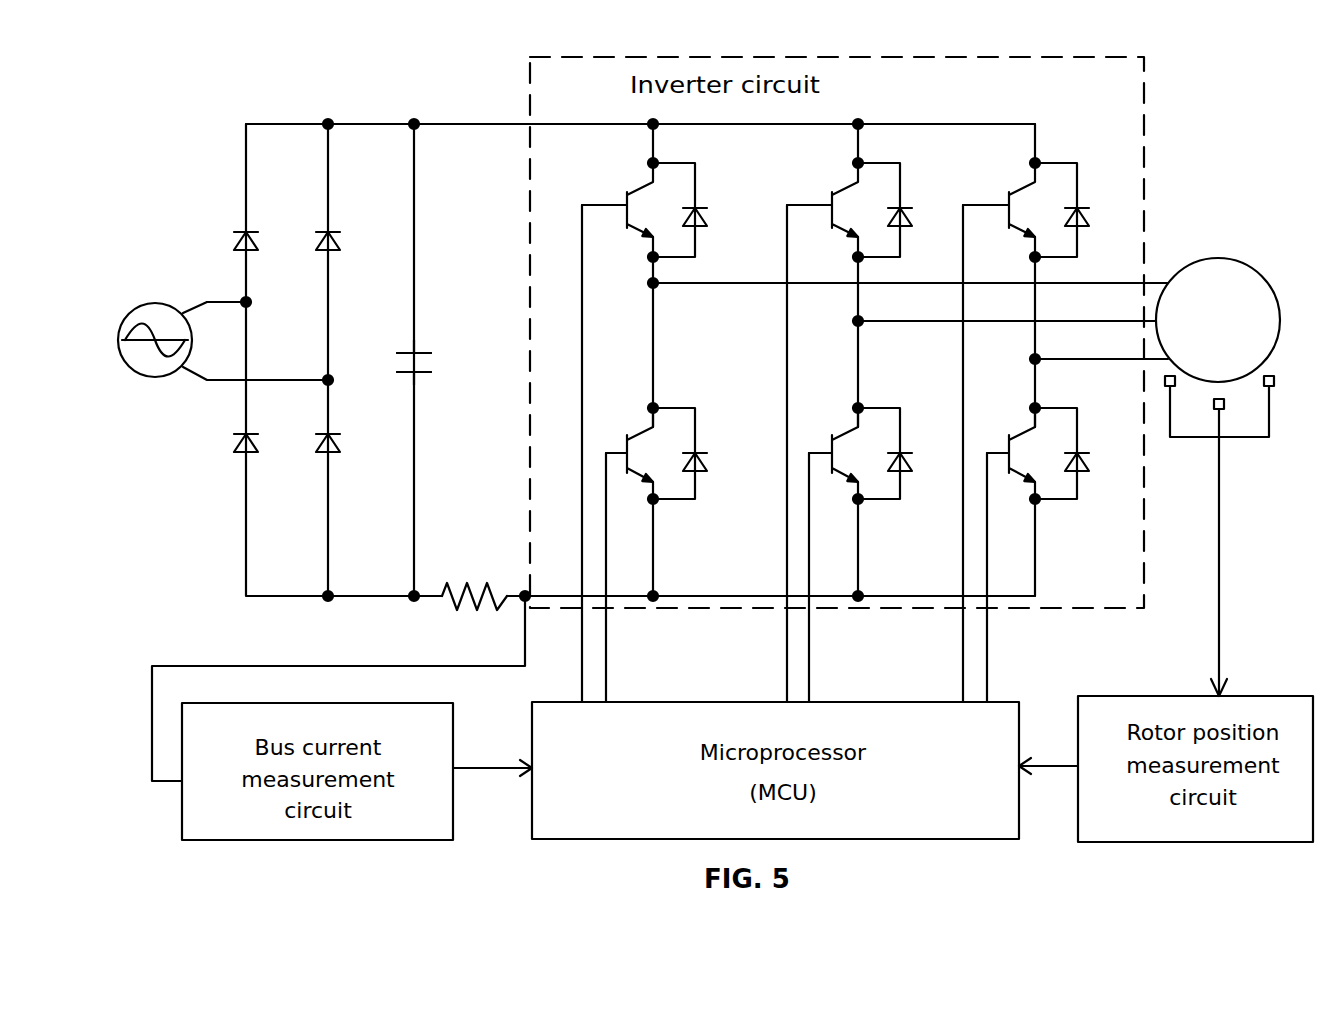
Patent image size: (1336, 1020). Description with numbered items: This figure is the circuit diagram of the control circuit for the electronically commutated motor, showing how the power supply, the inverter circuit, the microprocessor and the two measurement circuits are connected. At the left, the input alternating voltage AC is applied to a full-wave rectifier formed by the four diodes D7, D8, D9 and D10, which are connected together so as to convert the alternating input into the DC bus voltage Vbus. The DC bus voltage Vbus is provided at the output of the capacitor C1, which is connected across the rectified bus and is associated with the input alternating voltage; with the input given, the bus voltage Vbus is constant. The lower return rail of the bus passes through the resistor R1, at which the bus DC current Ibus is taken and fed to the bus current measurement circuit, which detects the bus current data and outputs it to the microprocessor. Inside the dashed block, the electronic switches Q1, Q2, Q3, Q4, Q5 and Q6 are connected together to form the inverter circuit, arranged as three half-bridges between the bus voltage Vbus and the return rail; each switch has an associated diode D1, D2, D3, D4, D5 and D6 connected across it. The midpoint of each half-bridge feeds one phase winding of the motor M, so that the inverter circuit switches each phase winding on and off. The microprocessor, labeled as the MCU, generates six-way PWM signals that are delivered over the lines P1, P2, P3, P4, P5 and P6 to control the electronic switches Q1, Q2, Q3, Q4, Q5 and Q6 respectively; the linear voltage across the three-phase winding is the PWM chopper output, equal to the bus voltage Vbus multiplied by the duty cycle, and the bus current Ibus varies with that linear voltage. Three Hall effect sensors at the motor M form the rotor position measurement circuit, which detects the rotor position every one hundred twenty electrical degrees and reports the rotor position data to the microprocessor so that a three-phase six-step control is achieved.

The diode D7 is at (261, 224).
The diode D8 is at (344, 224).
The diode D9 is at (261, 462).
The diode D10 is at (351, 462).
The capacitor C1 is at (424, 376).
The resistor R1 is at (474, 581).
The electronic switch Q1 is at (620, 210).
The electronic switch Q2 is at (825, 210).
The electronic switch Q3 is at (1001, 210).
The electronic switch Q4 is at (630, 452).
The electronic switch Q5 is at (835, 452).
The electronic switch Q6 is at (1012, 452).
The diode D1 is at (696, 210).
The diode D2 is at (900, 210).
The diode D3 is at (1076, 210).
The diode D4 is at (694, 453).
The diode D5 is at (900, 453).
The diode D6 is at (1076, 453).
The PWM signal line P1 is at (564, 453).
The PWM signal line P2 is at (623, 577).
The PWM signal line P3 is at (767, 453).
The PWM signal line P4 is at (828, 577).
The PWM signal line P5 is at (944, 453).
The PWM signal line P6 is at (1004, 577).
The DC bus voltage Vbus is at (388, 107).
The bus DC current Ibus is at (341, 686).
The motor M is at (1218, 320).
The input alternating voltage AC is at (209, 322).